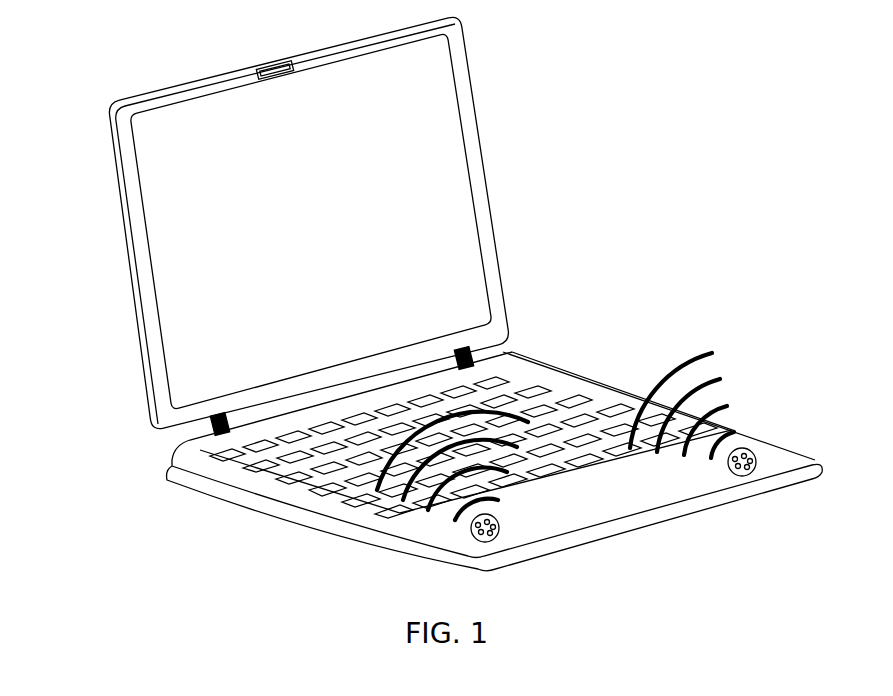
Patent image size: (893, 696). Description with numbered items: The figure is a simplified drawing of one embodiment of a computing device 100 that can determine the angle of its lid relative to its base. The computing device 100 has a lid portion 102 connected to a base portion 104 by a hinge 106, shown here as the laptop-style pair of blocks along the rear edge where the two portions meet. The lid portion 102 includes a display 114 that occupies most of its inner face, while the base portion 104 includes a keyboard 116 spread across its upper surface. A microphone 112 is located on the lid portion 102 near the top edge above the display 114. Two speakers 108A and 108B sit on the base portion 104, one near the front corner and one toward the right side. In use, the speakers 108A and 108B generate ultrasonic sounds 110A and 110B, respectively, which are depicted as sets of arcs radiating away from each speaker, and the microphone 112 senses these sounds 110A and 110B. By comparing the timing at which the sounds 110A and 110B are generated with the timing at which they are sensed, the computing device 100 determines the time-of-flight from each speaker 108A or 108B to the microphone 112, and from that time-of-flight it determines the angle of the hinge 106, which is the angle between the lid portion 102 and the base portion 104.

The computing device 100 is at (60, 90).
The lid portion 102 is at (117, 168).
The base portion 104 is at (173, 467).
The hinge 106 is at (213, 422).
The speaker 108A is at (470, 534).
The speaker 108B is at (755, 455).
The ultrasonic sounds 110A is at (376, 488).
The ultrasonic sounds 110B is at (690, 358).
The microphone 112 is at (283, 63).
The display 114 is at (157, 233).
The keyboard 116 is at (288, 480).